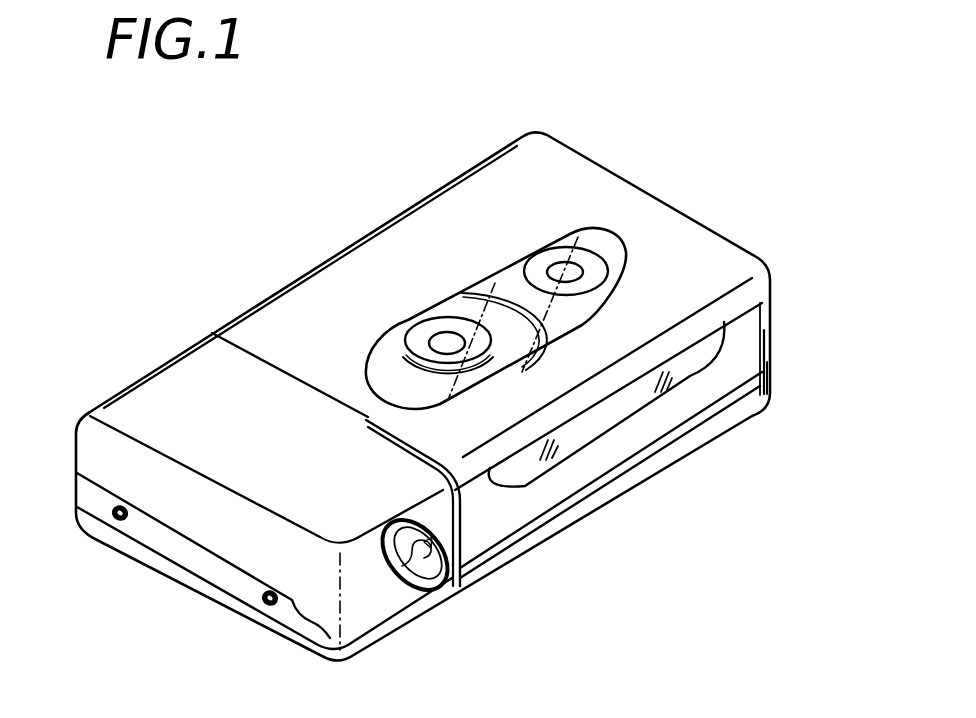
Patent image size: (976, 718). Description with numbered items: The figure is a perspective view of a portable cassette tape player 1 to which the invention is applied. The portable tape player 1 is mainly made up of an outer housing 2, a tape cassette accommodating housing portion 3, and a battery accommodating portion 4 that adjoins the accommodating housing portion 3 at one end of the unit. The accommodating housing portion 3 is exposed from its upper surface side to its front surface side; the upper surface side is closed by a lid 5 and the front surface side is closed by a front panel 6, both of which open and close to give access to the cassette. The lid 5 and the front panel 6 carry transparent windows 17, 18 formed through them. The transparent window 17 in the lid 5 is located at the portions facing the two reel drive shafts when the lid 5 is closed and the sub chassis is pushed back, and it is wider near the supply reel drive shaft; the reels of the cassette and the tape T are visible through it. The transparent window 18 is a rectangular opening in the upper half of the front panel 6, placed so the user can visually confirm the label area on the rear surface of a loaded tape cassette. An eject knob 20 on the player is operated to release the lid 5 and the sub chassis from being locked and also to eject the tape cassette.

The portable tape player 1 is at (325, 224).
The outer housing 2 is at (640, 483).
The tape cassette accommodating housing portion 3 is at (780, 290).
The battery accommodating portion 4 is at (66, 452).
The lid 5 is at (565, 167).
The front panel 6 is at (538, 500).
The transparent window 17 is at (513, 280).
The transparent window 18 is at (673, 392).
The eject knob 20 is at (413, 583).
The magnetic tape T is at (462, 310).